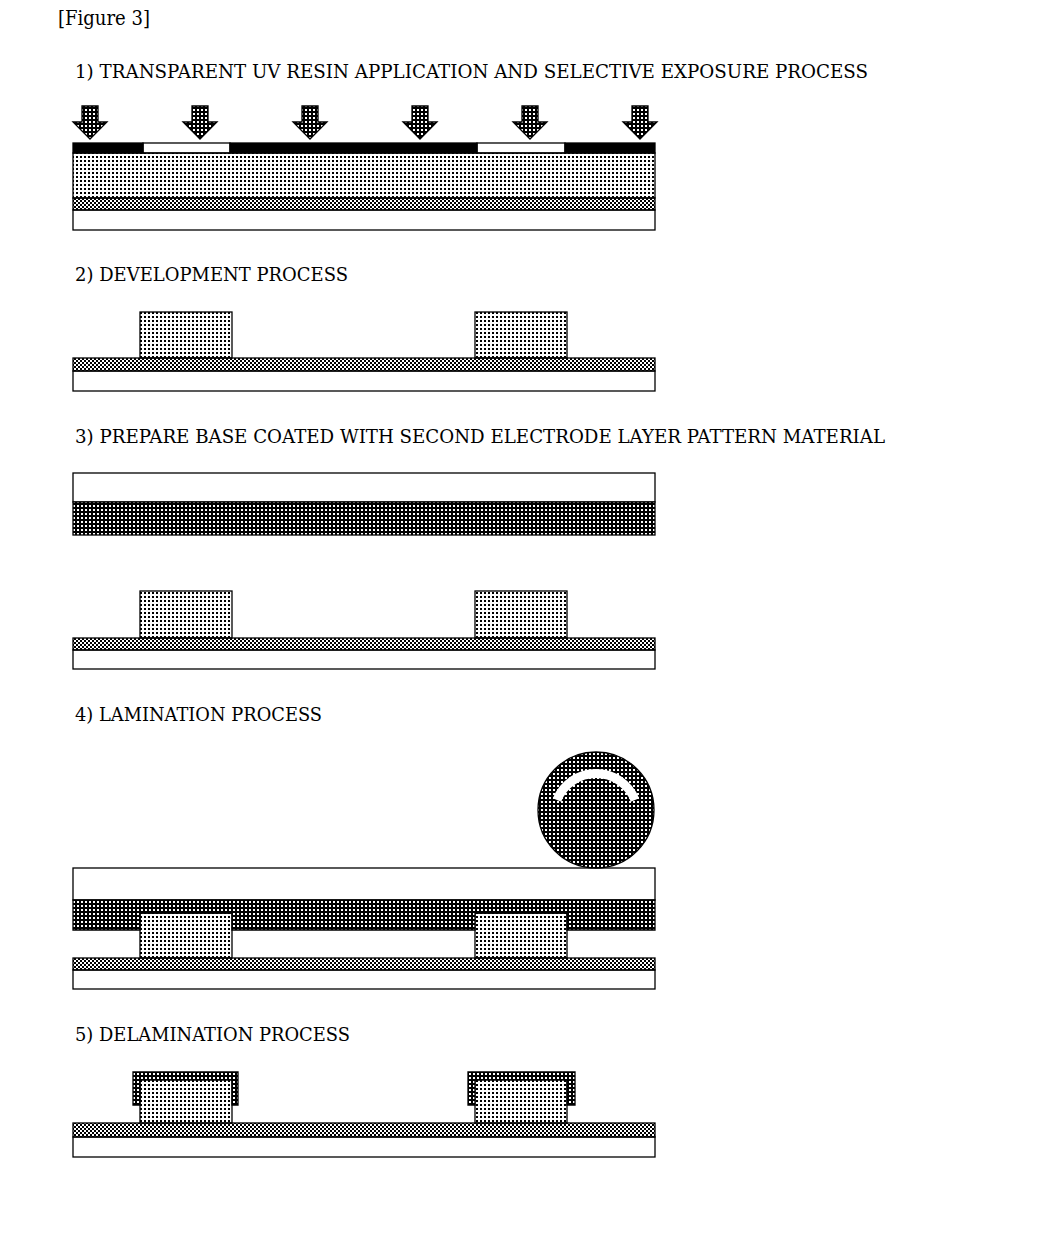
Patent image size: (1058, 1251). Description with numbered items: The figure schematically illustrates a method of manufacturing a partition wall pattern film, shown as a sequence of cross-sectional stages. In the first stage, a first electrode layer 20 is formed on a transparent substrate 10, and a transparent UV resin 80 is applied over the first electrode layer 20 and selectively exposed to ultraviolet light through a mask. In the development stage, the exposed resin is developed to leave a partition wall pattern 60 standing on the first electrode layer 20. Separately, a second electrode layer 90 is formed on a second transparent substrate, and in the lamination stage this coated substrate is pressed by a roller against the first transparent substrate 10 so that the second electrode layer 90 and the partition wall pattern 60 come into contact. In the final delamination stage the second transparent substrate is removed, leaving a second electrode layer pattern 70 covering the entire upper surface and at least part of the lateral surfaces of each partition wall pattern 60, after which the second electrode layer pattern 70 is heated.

The transparent substrate 10 is at (655, 224).
The first electrode layer 20 is at (655, 200).
The partition wall pattern 60 is at (567, 322).
The second electrode layer pattern 70 is at (575, 1078).
The transparent UV resin 80 is at (655, 161).
The second electrode layer 90 is at (655, 521).